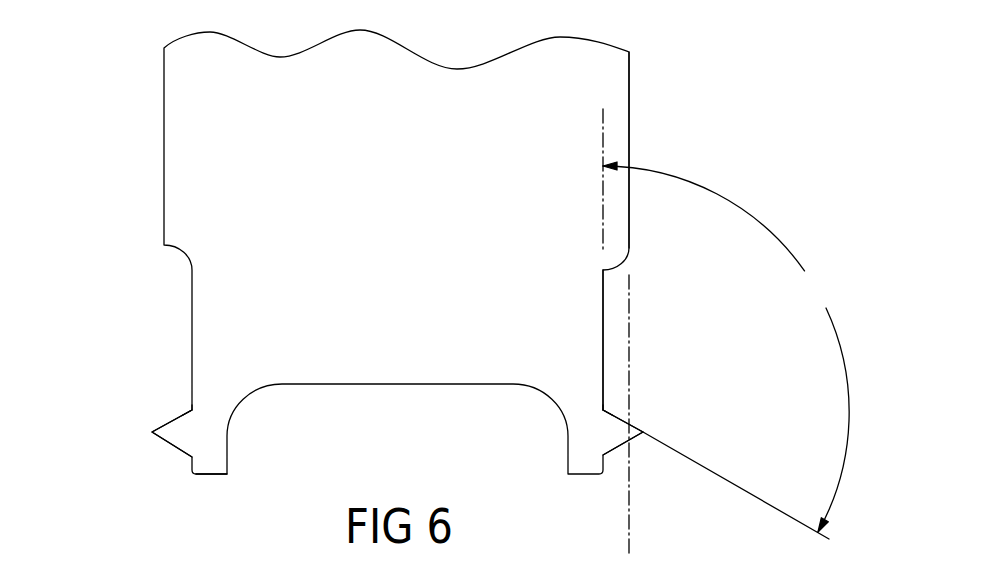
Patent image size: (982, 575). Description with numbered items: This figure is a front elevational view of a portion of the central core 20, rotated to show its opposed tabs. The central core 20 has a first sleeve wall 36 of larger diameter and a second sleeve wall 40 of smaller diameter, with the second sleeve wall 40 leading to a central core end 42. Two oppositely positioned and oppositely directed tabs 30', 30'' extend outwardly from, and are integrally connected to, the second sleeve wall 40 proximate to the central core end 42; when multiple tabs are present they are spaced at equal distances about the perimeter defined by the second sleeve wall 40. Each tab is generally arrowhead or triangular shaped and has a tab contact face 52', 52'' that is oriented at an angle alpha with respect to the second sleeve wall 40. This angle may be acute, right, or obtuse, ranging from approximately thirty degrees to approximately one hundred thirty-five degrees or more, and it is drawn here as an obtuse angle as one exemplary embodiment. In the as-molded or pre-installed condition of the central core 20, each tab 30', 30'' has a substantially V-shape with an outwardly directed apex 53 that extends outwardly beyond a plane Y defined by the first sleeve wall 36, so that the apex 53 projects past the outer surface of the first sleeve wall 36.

The central core 20 is at (142, 113).
The first sleeve wall 36 is at (629, 110).
The second sleeve wall 40 is at (604, 340).
The central core end 42 is at (212, 463).
The tab 30' is at (602, 471).
The tab 30'' is at (152, 446).
The tab contact face 52' is at (647, 378).
The tab contact face 52'' is at (153, 381).
The outwardly directed apex 53 is at (645, 432).
The plane Y is at (630, 287).